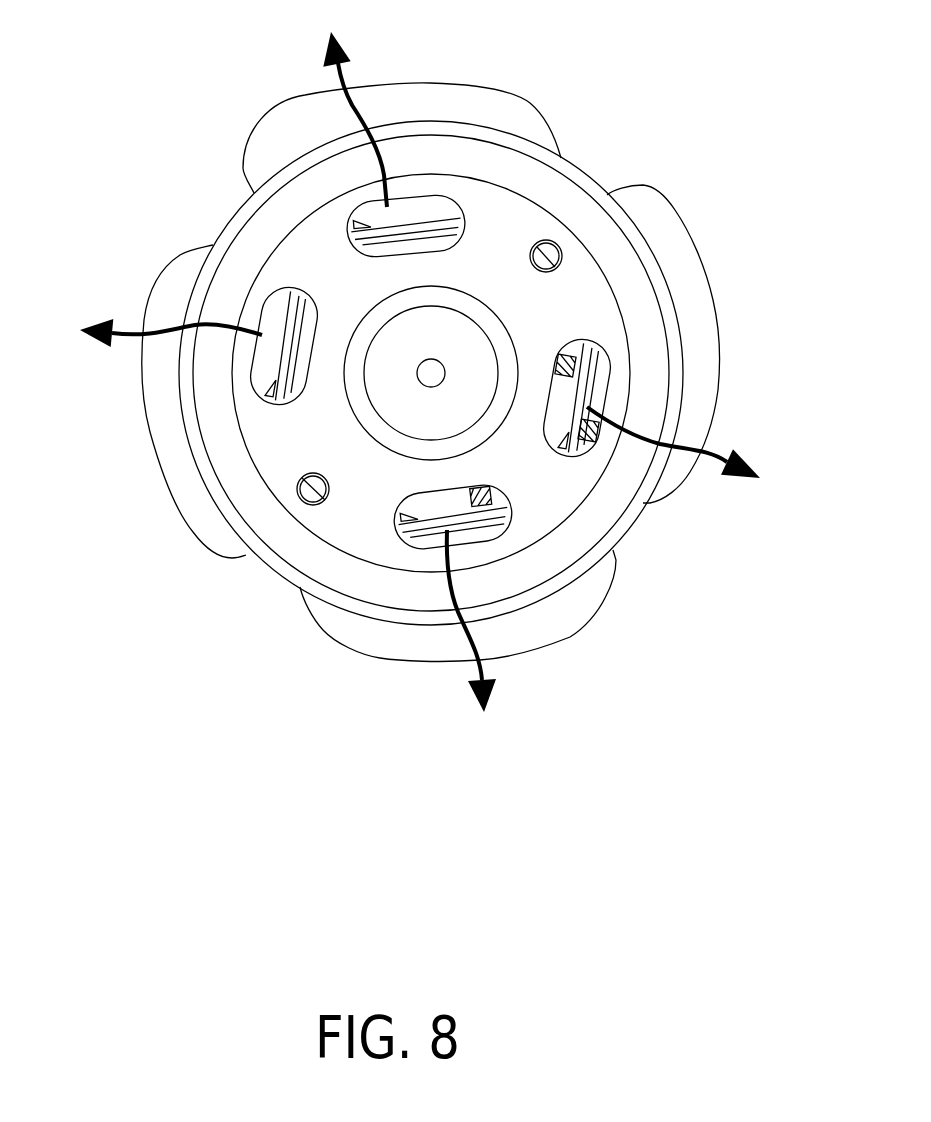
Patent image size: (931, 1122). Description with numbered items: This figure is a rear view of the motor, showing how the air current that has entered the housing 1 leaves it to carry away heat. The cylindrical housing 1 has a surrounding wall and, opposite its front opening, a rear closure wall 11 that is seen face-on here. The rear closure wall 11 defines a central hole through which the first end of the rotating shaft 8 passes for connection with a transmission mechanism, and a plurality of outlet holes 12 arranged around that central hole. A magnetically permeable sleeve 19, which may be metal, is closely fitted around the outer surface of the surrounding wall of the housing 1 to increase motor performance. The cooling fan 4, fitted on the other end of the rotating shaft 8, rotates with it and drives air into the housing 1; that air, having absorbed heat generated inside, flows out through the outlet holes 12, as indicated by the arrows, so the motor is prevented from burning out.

The housing 1 is at (297, 553).
The cooling fan 4 is at (697, 352).
The rotating shaft 8 is at (432, 372).
The rear closure wall 11 is at (552, 475).
The outlet holes 12 is at (413, 203).
The magnetically permeable sleeve 19 is at (196, 425).